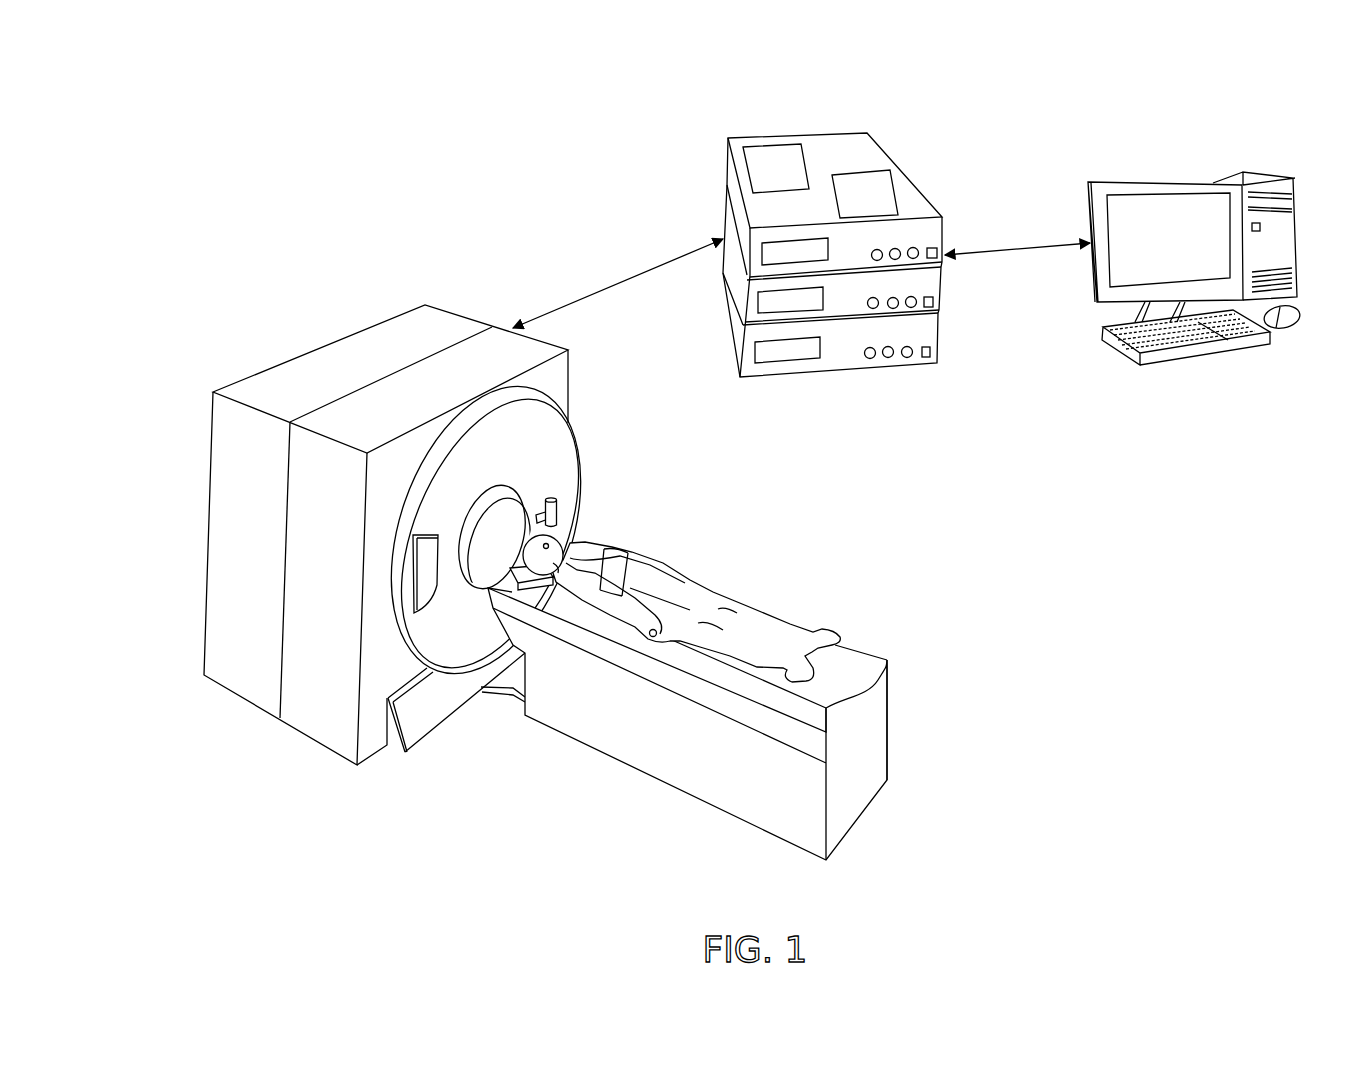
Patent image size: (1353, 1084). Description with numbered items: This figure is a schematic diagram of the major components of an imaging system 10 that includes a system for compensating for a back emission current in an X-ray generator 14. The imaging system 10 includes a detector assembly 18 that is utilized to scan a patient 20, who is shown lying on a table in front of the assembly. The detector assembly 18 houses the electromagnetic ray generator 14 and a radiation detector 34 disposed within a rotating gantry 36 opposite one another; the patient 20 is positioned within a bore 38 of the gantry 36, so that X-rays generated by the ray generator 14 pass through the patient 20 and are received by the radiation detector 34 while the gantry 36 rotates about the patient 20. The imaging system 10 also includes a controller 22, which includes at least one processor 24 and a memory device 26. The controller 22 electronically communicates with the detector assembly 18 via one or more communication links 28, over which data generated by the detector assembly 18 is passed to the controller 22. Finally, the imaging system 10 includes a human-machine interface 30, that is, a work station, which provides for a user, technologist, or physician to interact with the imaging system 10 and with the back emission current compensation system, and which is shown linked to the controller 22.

The imaging system 10 is at (1152, 86).
The X-ray generator 14 is at (557, 508).
The detector assembly 18 is at (571, 370).
The patient 20 is at (628, 570).
The controller 22 is at (728, 167).
The processor 24 is at (775, 143).
The memory device 26 is at (898, 188).
The communication links 28 is at (613, 283).
The human-machine interface 30 is at (1165, 182).
The radiation detector 34 is at (432, 607).
The rotating gantry 36 is at (572, 442).
The bore 38 is at (519, 490).